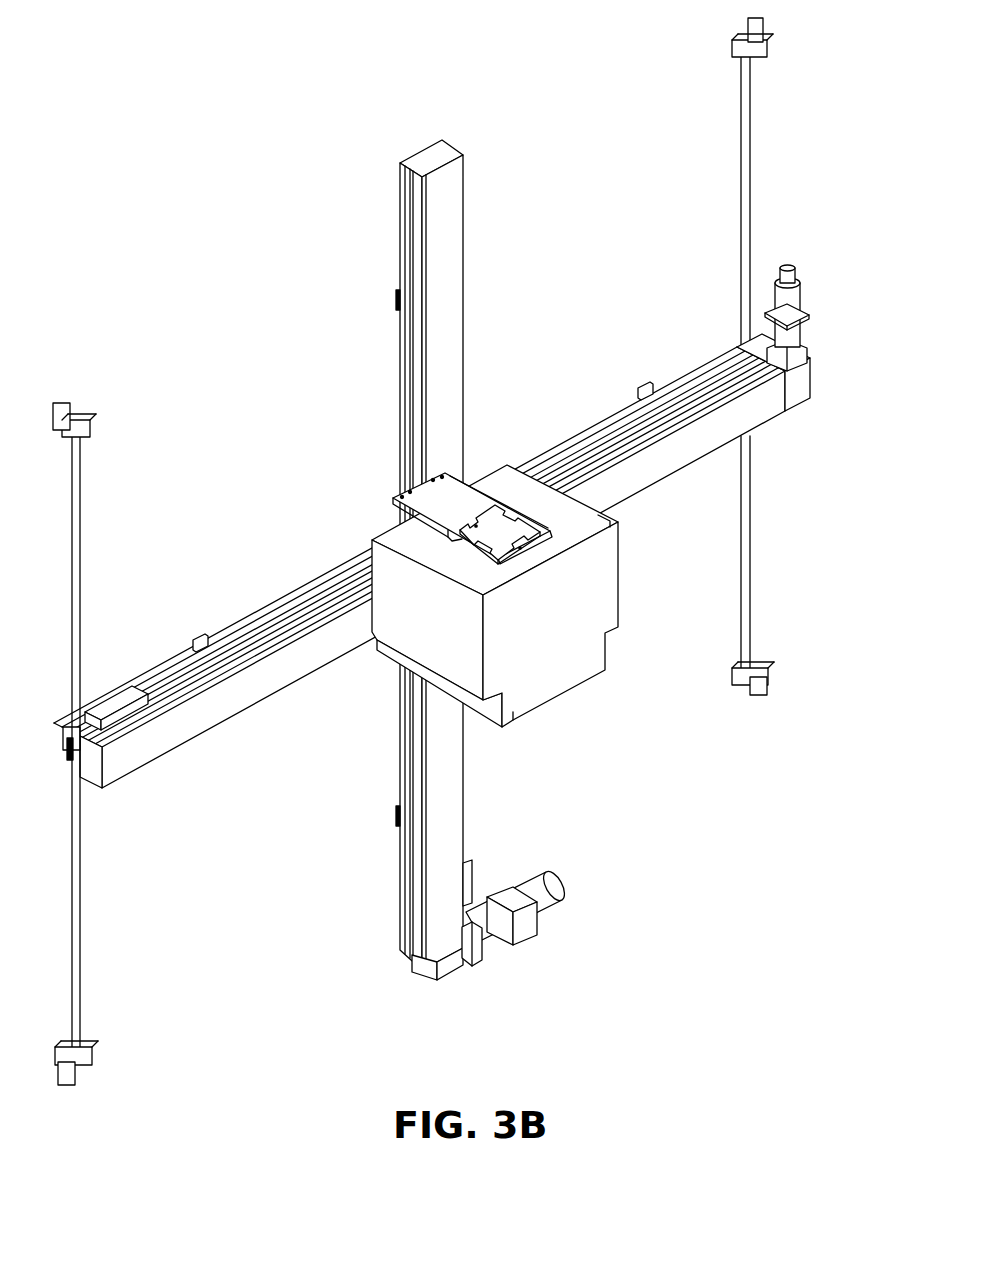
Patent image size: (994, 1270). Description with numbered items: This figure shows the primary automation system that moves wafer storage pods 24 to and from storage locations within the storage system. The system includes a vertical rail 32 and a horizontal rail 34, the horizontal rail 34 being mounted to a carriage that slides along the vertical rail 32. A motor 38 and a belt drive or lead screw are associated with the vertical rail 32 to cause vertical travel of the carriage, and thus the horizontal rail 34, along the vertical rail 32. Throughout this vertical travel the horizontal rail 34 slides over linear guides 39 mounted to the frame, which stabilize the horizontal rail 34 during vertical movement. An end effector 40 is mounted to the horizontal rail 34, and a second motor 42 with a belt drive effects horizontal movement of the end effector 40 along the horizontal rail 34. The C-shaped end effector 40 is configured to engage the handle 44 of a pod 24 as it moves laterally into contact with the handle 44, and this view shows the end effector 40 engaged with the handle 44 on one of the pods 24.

The wafer storage pod 24 is at (613, 597).
The vertical rail 32 is at (458, 288).
The horizontal rail 34 is at (183, 737).
The motor 38 is at (548, 905).
The linear guide 39 is at (77, 495).
The end effector 40 is at (515, 553).
The second motor 42 is at (806, 285).
The handle 44 is at (480, 532).